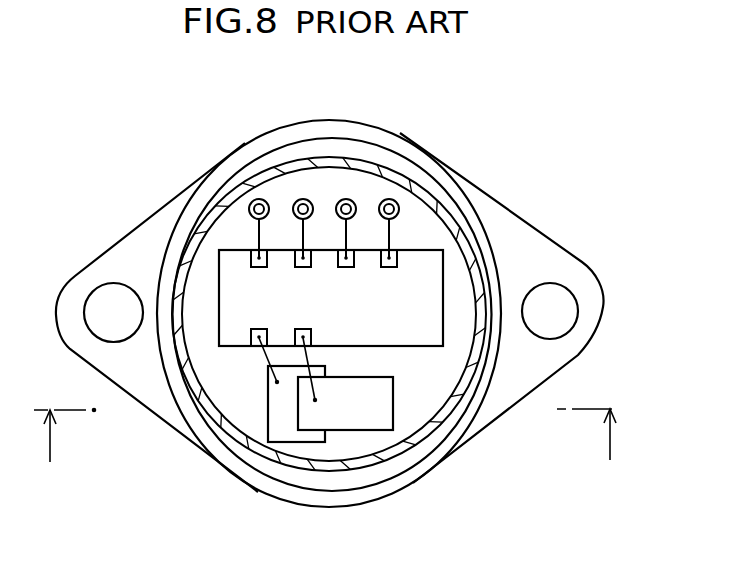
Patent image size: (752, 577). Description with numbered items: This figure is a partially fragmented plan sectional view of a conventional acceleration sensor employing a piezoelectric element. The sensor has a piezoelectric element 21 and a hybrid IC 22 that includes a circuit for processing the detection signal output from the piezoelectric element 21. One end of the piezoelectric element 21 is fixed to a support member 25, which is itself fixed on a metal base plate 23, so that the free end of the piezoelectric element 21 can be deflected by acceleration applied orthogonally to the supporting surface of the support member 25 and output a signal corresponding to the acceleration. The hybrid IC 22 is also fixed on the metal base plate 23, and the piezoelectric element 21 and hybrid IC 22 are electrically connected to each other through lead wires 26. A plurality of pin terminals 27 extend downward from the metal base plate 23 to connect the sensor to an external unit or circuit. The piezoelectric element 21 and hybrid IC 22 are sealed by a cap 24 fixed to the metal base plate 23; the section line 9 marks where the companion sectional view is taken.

The section line 9 is at (327, 460).
The piezoelectric element 21 is at (390, 404).
The hybrid IC 22 is at (418, 263).
The metal base plate 23 is at (547, 262).
The cap 24 is at (344, 156).
The support member 25 is at (290, 430).
The lead wires 26 is at (260, 355).
The pin terminals 27 is at (258, 199).